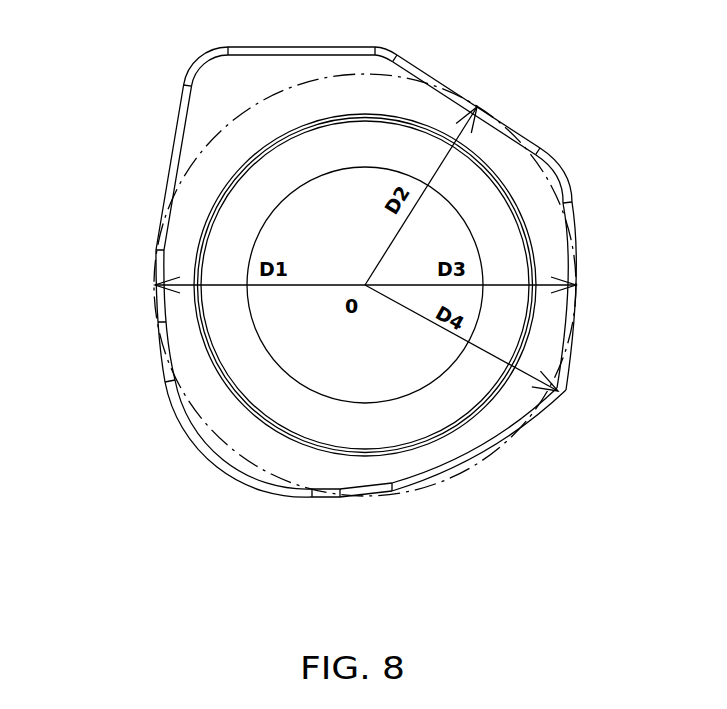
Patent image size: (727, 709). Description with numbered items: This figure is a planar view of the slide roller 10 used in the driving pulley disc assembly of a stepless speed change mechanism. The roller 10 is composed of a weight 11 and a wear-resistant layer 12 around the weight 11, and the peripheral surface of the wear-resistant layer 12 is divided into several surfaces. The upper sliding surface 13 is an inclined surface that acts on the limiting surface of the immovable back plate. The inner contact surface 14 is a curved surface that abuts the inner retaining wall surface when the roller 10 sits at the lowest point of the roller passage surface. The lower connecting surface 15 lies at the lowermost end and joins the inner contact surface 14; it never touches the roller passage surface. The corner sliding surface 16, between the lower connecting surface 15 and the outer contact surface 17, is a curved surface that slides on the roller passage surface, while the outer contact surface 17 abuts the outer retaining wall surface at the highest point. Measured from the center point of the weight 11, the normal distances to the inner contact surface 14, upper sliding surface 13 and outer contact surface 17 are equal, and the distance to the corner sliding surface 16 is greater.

The roller 10 is at (130, 160).
The weight 11 is at (273, 398).
The wear-resistant layer 12 is at (498, 422).
The upper sliding surface 13 is at (485, 107).
The inner contact surface 14 is at (150, 290).
The lower connecting surface 15 is at (437, 477).
The corner sliding surface 16 is at (560, 389).
The outer contact surface 17 is at (578, 287).